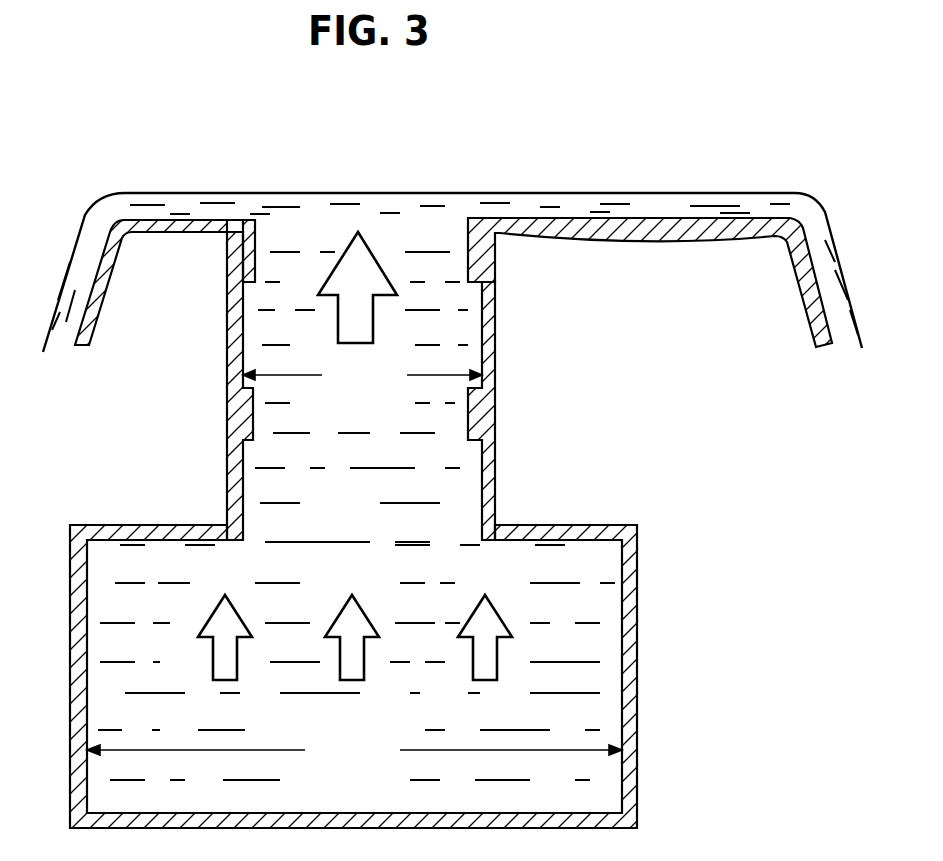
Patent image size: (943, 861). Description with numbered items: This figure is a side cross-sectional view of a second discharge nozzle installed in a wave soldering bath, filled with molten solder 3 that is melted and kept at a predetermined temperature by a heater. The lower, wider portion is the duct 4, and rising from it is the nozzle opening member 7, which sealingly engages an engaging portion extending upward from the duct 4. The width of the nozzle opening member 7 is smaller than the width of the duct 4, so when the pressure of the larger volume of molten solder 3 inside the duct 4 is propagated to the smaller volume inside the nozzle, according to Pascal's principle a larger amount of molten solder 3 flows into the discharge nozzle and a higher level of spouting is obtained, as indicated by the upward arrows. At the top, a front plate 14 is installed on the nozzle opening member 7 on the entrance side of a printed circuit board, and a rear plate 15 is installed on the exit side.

The molten solder 3 is at (350, 522).
The duct 4 is at (637, 625).
The nozzle opening member 7 is at (495, 352).
The front plate 14 is at (172, 232).
The rear plate 15 is at (558, 233).